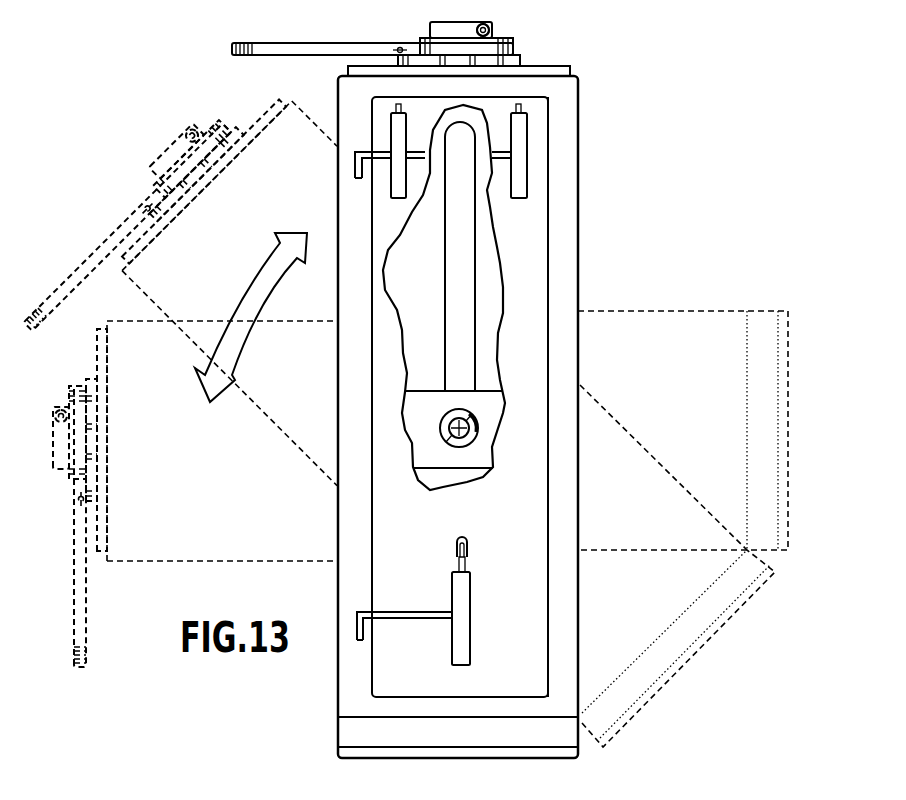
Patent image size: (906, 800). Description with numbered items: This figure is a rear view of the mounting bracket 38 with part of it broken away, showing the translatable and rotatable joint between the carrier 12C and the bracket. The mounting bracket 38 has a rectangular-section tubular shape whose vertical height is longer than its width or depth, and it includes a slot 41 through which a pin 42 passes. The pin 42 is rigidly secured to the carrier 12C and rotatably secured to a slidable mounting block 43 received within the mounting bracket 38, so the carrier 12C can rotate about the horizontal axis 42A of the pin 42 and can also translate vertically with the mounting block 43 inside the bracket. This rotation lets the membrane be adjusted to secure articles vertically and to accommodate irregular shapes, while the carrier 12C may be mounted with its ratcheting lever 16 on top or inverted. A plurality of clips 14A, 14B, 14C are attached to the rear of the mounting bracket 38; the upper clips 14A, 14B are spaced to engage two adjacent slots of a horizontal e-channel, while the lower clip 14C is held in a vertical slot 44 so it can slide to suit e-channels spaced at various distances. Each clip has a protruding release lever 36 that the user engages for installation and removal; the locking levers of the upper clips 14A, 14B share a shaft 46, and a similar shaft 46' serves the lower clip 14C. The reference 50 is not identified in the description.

The carrier 12C is at (580, 138).
The ratcheting lever 16 is at (273, 48).
The top plate assembly 50 is at (330, 43).
The release lever 36 is at (397, 107).
The upper clip 14A is at (398, 137).
The upper clip 14B is at (522, 147).
The lower clip 14C is at (463, 617).
The vertical slot 44 is at (462, 537).
The shared shaft 46 is at (401, 168).
The shaft 46' is at (376, 603).
The slot 41 is at (462, 228).
The mounting block 43 is at (487, 398).
The pin 42 is at (475, 427).
The horizontal axis 42A is at (463, 435).
The mounting bracket 38 is at (550, 423).